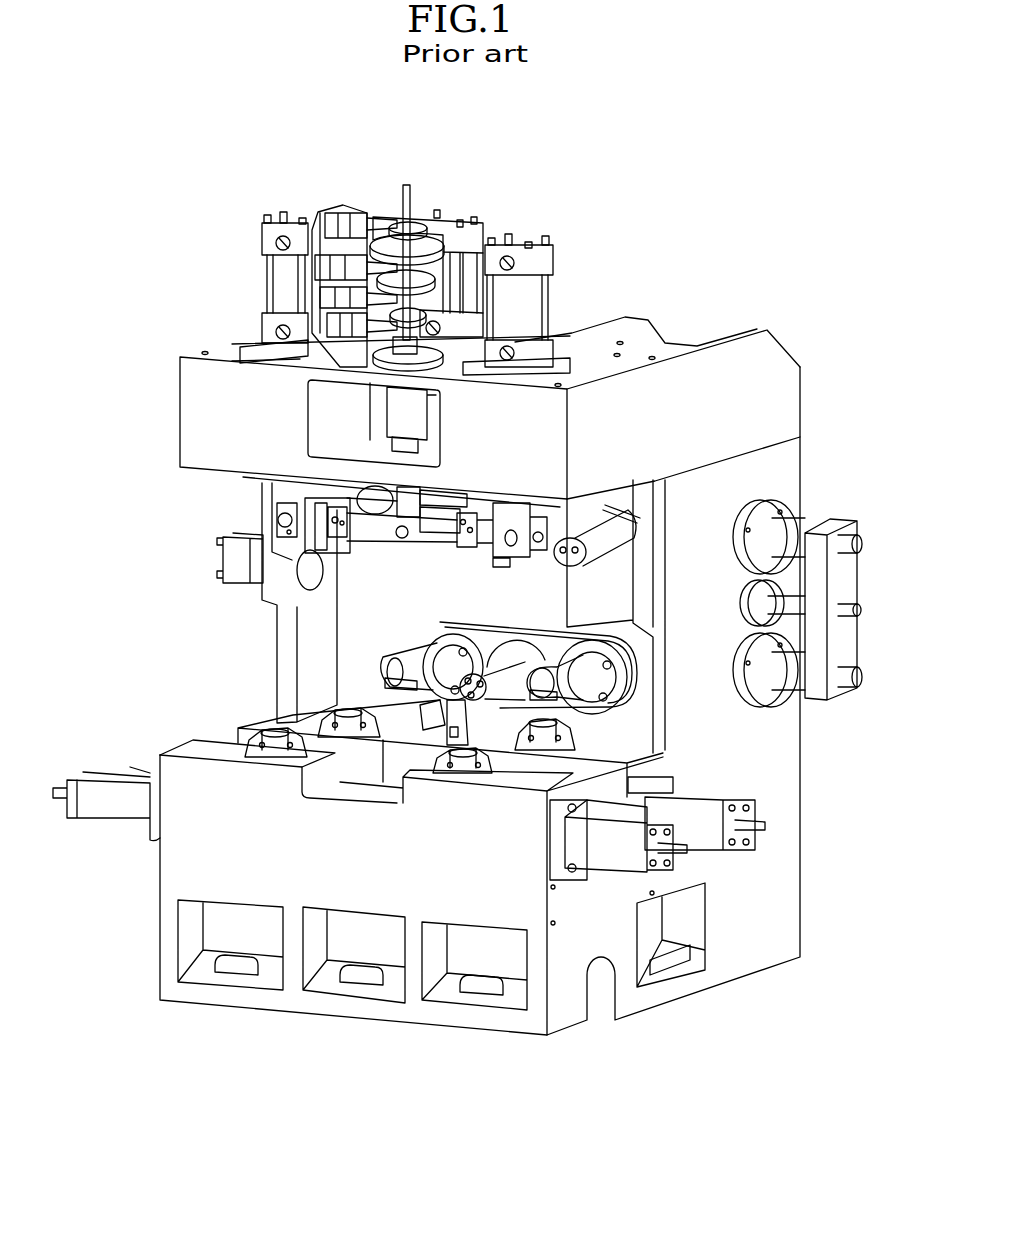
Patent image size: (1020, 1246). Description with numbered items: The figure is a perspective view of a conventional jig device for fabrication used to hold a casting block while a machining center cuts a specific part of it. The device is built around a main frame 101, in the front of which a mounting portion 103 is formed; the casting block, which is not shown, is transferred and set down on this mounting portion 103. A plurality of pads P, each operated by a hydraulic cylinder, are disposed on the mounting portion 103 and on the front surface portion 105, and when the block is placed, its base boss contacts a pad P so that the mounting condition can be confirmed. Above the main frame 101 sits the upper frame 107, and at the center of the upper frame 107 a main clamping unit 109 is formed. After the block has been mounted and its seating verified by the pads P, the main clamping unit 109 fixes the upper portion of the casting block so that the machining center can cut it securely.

The main frame 101 is at (741, 748).
The mounting portion 103 is at (291, 718).
The front surface portion 105 is at (560, 572).
The upper frame 107 is at (665, 402).
The main clamping unit 109 is at (441, 205).
The pad P is at (320, 542).